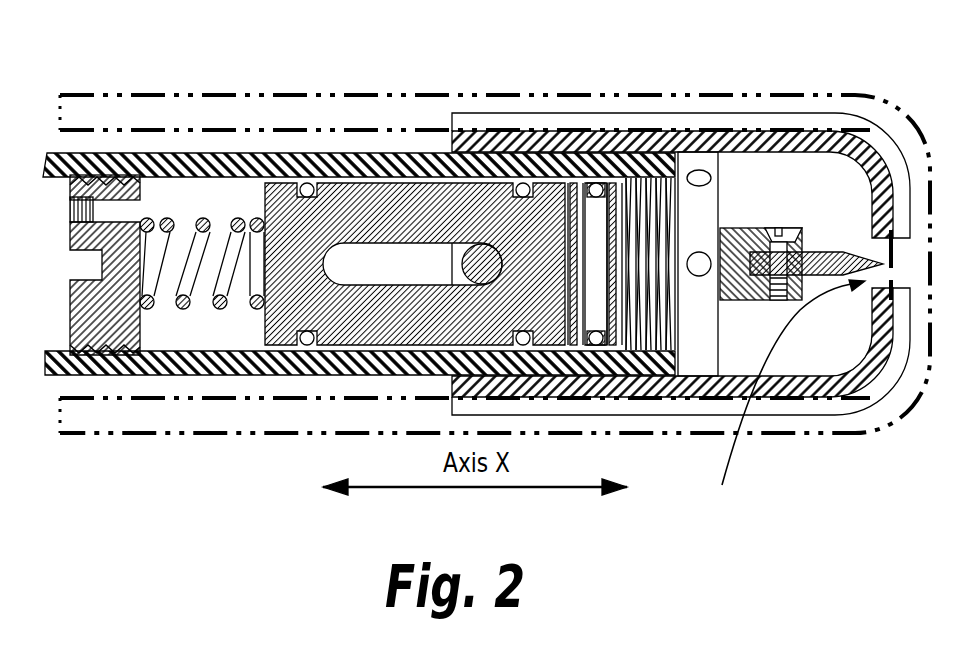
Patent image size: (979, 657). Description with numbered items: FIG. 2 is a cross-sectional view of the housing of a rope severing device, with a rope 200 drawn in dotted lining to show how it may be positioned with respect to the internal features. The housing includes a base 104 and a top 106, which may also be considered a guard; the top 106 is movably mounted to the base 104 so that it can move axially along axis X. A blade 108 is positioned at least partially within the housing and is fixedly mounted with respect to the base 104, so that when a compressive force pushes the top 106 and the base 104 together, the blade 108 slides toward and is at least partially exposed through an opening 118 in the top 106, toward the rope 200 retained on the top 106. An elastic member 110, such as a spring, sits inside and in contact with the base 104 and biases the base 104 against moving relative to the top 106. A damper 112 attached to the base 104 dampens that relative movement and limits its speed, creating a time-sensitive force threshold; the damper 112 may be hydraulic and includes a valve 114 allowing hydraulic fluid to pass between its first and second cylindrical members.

The base 104 is at (359, 204).
The top 106 is at (706, 153).
The blade 108 is at (846, 252).
The elastic member 110 is at (192, 255).
The damper 112 is at (112, 325).
The valve 114 is at (70, 202).
The opening 118 is at (785, 406).
The rope 200 is at (405, 110).